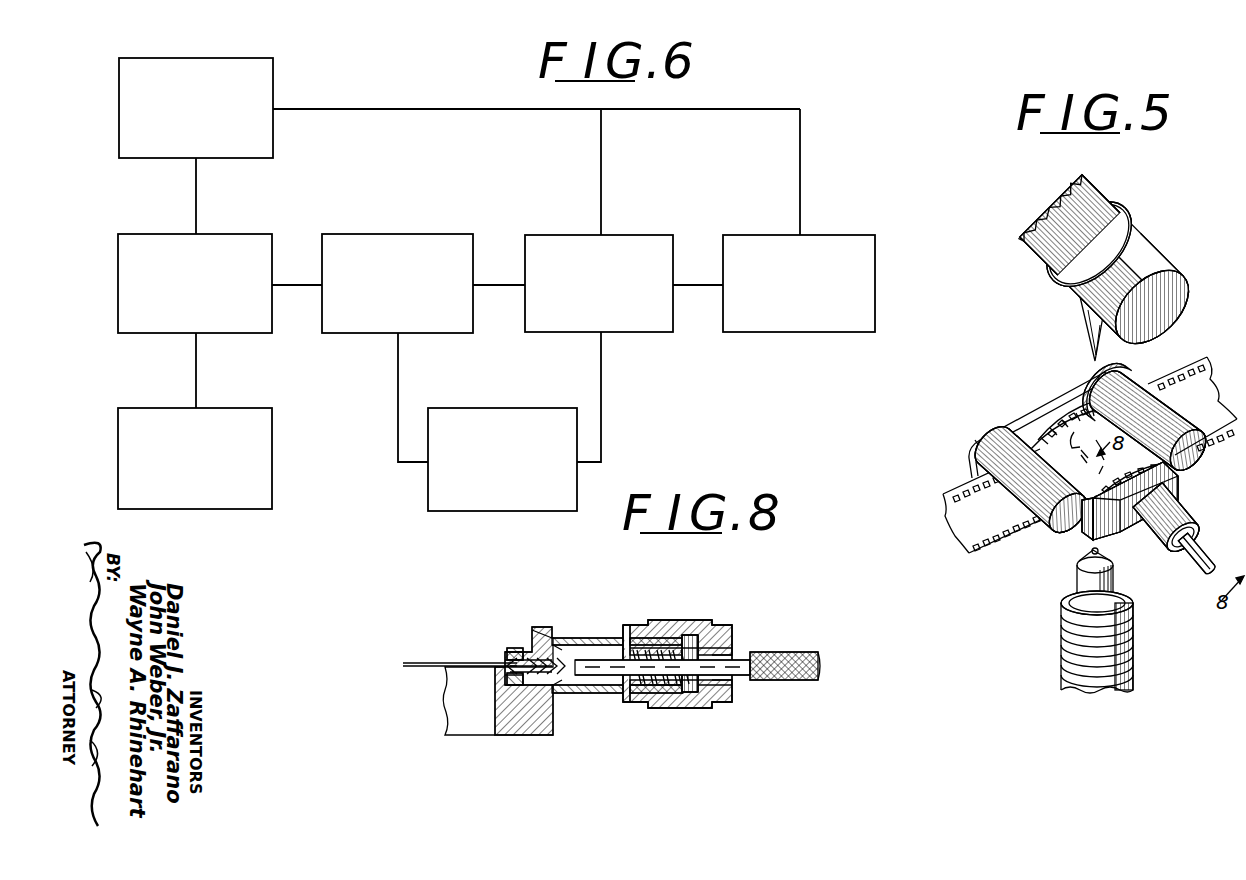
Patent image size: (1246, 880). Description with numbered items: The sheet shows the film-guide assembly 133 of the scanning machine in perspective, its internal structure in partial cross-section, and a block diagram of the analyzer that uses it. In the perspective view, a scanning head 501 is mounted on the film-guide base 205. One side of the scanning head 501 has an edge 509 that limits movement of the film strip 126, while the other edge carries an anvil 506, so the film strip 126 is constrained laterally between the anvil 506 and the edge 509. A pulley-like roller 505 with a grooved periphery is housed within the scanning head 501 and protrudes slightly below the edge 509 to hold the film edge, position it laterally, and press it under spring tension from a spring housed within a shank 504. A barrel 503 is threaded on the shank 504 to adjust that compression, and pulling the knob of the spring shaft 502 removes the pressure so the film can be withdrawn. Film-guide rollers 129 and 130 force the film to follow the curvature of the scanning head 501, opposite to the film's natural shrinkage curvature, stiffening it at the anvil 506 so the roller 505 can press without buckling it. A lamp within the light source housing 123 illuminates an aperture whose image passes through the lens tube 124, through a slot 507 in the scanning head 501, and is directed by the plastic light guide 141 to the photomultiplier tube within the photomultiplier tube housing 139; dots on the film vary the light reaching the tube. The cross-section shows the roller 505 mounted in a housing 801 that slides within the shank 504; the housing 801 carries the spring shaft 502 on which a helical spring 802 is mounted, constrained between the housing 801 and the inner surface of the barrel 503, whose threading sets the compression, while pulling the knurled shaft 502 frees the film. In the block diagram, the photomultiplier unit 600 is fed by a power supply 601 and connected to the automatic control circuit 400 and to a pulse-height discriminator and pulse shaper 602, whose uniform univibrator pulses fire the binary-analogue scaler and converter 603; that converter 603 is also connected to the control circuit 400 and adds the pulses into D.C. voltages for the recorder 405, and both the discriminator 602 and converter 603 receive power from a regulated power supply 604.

In FIG. 6, the automatic control circuit 400 is at (274, 65).
In FIG. 6, the photomultiplier unit 600 is at (218, 237).
In FIG. 6, the pulse-height discriminator and pulse shaper 602 is at (426, 237).
In FIG. 6, the binary-analogue scaler and converter 603 is at (640, 238).
In FIG. 6, the recorder 405 is at (812, 240).
In FIG. 6, the power supply 601 is at (225, 412).
In FIG. 6, the regulated power supply 604 is at (538, 391).
In FIG. 5, the photomultiplier tube housing 139 is at (1143, 266).
In FIG. 5, the plastic light guide 141 is at (1090, 318).
In FIG. 5, the film-guide base 205 is at (1100, 388).
In FIG. 5, the anvil 506 is at (1053, 420).
In FIG. 8, the slot 507 is at (520, 724).
In FIG. 5, the slot 507 is at (1038, 404).
In FIG. 5, the film-guide roller 130 is at (1142, 388).
In FIG. 8, the roller 505 is at (512, 662).
In FIG. 5, the roller 505 is at (1150, 435).
In FIG. 5, the film-guide roller 129 is at (1000, 470).
In FIG. 8, the film strip 126 is at (432, 667).
In FIG. 5, the film strip 126 is at (945, 495).
In FIG. 8, the scanning head 501 is at (442, 739).
In FIG. 5, the scanning head 501 is at (1134, 529).
In FIG. 8, the barrel 503 is at (680, 620).
In FIG. 5, the barrel 503 is at (1178, 523).
In FIG. 8, the shank 504 is at (572, 638).
In FIG. 5, the shank 504 is at (1130, 535).
In FIG. 8, the edge 509 is at (532, 632).
In FIG. 5, the edge 509 is at (1088, 525).
In FIG. 8, the spring shaft 502 is at (735, 660).
In FIG. 5, the spring shaft 502 is at (1215, 568).
In FIG. 5, the lens tube 124 is at (1085, 577).
In FIG. 5, the film-guide assembly 133 is at (990, 574).
In FIG. 5, the light source housing 123 is at (1065, 643).
In FIG. 8, the housing 801 is at (516, 648).
In FIG. 8, the helical spring 802 is at (640, 683).